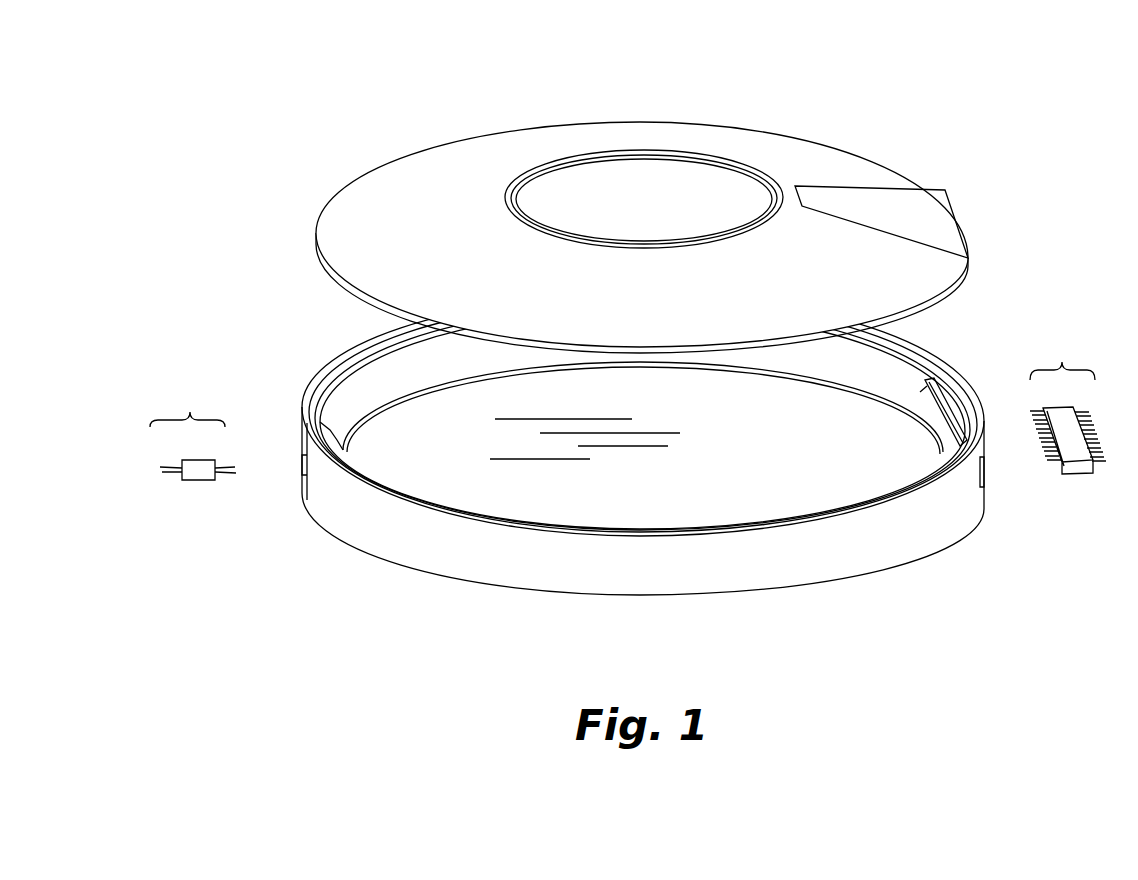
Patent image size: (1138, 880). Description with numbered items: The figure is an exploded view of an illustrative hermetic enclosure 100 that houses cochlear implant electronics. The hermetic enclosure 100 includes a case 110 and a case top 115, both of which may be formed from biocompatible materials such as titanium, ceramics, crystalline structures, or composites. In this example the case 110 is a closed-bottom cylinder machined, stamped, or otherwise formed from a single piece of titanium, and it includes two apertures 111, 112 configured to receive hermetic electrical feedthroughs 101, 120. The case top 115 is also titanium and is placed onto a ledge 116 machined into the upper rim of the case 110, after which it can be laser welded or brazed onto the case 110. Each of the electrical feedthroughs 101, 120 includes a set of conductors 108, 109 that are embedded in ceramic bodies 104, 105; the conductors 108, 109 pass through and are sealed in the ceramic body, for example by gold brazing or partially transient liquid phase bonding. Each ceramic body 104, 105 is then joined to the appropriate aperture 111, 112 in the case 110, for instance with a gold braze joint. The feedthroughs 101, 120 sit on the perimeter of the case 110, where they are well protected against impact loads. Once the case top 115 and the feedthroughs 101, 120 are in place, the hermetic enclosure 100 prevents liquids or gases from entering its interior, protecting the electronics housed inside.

The hermetic enclosure 100 is at (875, 95).
The hermetic electrical feedthrough 101 is at (1062, 362).
The ceramic body 104 is at (1080, 470).
The ceramic body 105 is at (200, 478).
The conductors 108 is at (1053, 466).
The conductors 109 is at (175, 478).
The case 110 is at (487, 568).
The aperture 111 is at (298, 473).
The aperture 112 is at (922, 432).
The case top 115 is at (420, 165).
The ledge 116 is at (325, 393).
The hermetic electrical feedthrough 120 is at (190, 412).